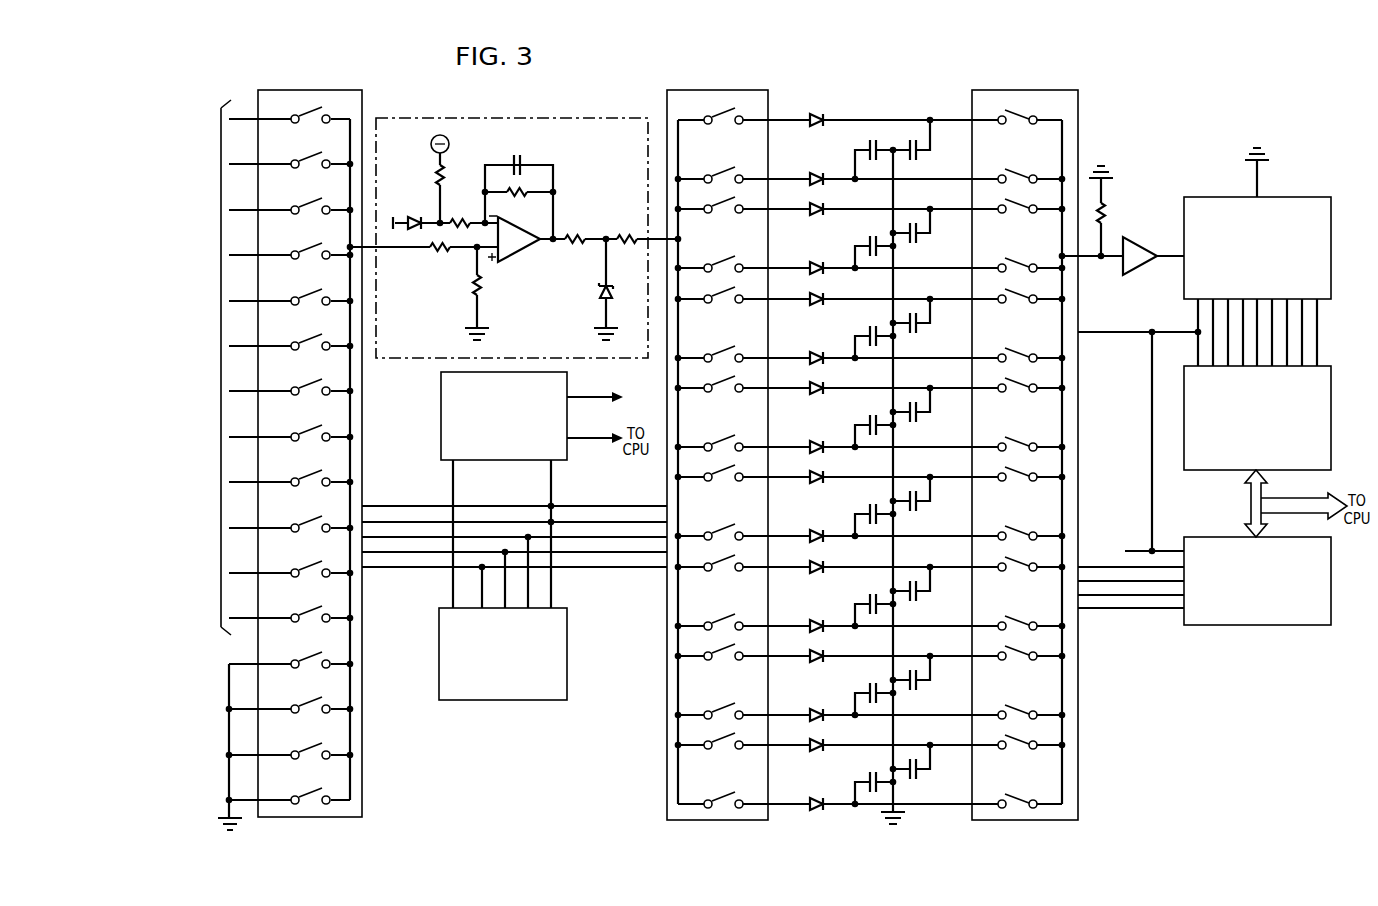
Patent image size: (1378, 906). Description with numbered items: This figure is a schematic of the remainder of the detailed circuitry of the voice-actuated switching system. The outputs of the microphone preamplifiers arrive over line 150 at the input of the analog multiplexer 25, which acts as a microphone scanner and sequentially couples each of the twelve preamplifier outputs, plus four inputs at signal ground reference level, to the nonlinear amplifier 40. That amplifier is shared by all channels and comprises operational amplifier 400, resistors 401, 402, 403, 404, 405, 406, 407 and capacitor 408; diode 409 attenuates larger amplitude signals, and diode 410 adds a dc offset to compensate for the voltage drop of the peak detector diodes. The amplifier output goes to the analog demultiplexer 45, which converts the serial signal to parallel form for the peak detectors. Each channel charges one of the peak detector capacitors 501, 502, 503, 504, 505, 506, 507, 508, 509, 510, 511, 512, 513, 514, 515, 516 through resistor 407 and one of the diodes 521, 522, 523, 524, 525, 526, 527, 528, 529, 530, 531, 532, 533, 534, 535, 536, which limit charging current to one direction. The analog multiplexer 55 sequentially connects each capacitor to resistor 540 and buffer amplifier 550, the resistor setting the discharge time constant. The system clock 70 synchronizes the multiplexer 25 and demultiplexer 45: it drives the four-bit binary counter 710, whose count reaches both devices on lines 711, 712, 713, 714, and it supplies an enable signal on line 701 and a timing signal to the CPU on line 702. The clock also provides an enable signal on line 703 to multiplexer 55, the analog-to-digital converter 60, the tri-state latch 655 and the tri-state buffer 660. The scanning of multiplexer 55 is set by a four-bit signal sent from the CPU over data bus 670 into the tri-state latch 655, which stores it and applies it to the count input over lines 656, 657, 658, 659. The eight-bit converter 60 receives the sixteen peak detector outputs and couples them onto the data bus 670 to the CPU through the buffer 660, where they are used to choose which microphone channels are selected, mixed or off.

The analog multiplexer 25 is at (340, 90).
The nonlinear amplifier 40 is at (514, 223).
The analog demultiplexer 45 is at (743, 90).
The analog multiplexer 55 is at (1051, 90).
The analog-to-digital converter 60 is at (1301, 197).
The system clock 70 is at (441, 393).
The line 150 is at (217, 413).
The operational amplifier 400 is at (519, 246).
The resistor 401 is at (491, 287).
The resistor 402 is at (440, 260).
The resistor 403 is at (461, 211).
The resistor 404 is at (426, 175).
The resistor 405 is at (518, 203).
The resistor 406 is at (575, 227).
The resistor 407 is at (626, 227).
The capacitor 408 is at (517, 154).
The diode 409 is at (592, 289).
The diode 410 is at (415, 212).
The peak detector capacitor 501 is at (912, 145).
The peak detector capacitor 502 is at (871, 152).
The peak detector capacitor 503 is at (912, 235).
The peak detector capacitor 504 is at (874, 242).
The peak detector capacitor 505 is at (912, 325).
The peak detector capacitor 506 is at (874, 332).
The peak detector capacitor 507 is at (912, 414).
The peak detector capacitor 508 is at (874, 421).
The peak detector capacitor 509 is at (912, 503).
The peak detector capacitor 510 is at (874, 510).
The peak detector capacitor 511 is at (912, 593).
The peak detector capacitor 512 is at (874, 600).
The peak detector capacitor 513 is at (912, 682).
The peak detector capacitor 514 is at (874, 689).
The peak detector capacitor 515 is at (912, 771).
The peak detector capacitor 516 is at (874, 778).
The diode 521 is at (815, 109).
The diode 522 is at (815, 169).
The diode 523 is at (815, 219).
The diode 524 is at (815, 258).
The diode 525 is at (815, 309).
The diode 526 is at (815, 348).
The diode 527 is at (815, 398).
The diode 528 is at (815, 437).
The diode 529 is at (815, 487).
The diode 530 is at (815, 526).
The diode 531 is at (815, 577).
The diode 532 is at (815, 616).
The diode 533 is at (815, 666).
The diode 534 is at (815, 705).
The diode 535 is at (815, 755).
The diode 536 is at (815, 794).
The resistor 540 is at (1112, 211).
The buffer amplifier 550 is at (1142, 251).
The tri-state latch 655 is at (1331, 572).
The line 656 is at (1114, 566).
The line 657 is at (1107, 580).
The line 658 is at (1116, 596).
The line 659 is at (1124, 609).
The tri-state buffer 660 is at (1331, 386).
The data bus 670 is at (1269, 500).
The line 701 is at (586, 505).
The line 702 is at (595, 430).
The line 703 is at (1141, 549).
The four-bit binary counter 710 is at (439, 647).
The line 711 is at (619, 521).
The line 712 is at (655, 536).
The line 713 is at (609, 553).
The line 714 is at (645, 568).